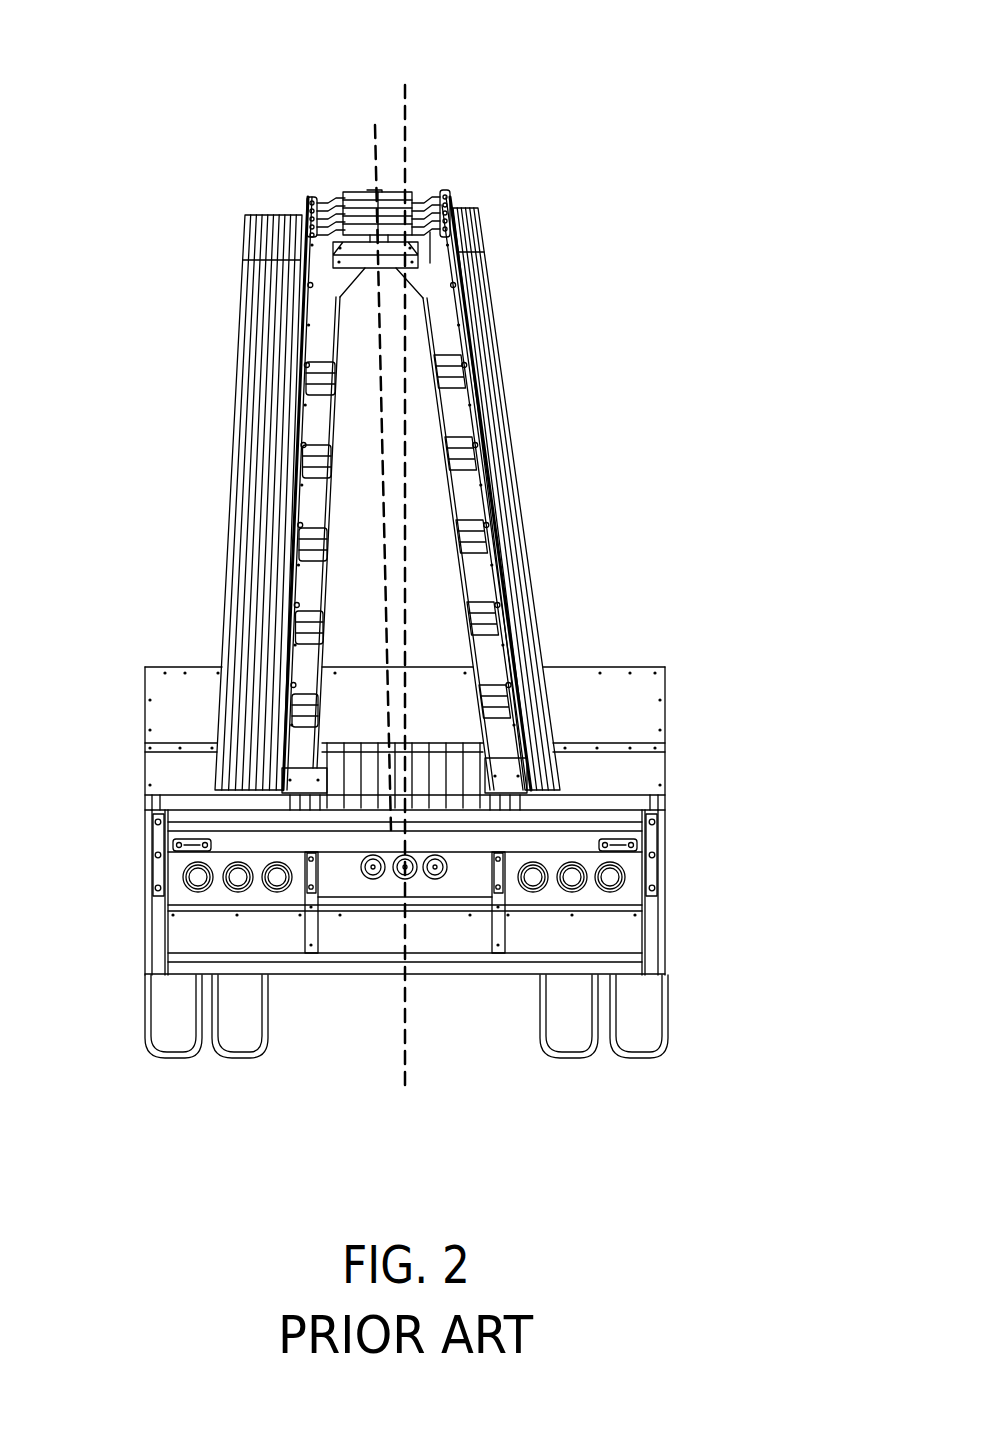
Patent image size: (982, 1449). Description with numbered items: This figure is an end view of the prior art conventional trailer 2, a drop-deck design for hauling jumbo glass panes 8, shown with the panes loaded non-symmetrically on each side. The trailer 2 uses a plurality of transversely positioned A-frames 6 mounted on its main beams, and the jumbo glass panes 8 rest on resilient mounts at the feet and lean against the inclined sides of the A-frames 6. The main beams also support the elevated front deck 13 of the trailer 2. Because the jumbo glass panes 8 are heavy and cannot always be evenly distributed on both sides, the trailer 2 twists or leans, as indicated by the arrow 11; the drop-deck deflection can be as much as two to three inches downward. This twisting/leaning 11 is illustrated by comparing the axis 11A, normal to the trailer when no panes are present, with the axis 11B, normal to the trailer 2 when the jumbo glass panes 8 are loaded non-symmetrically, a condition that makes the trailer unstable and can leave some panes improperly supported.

The trailer 2 is at (762, 510).
The A-frame 6 is at (432, 263).
The jumbo glass panes 8 is at (214, 507).
The twisting/leaning 11 is at (407, 52).
The axis normal to the trailer when no panes are present 11A is at (405, 103).
The axis normal to the trailer when panes are present 11B is at (372, 146).
The elevated front deck 13 is at (617, 807).